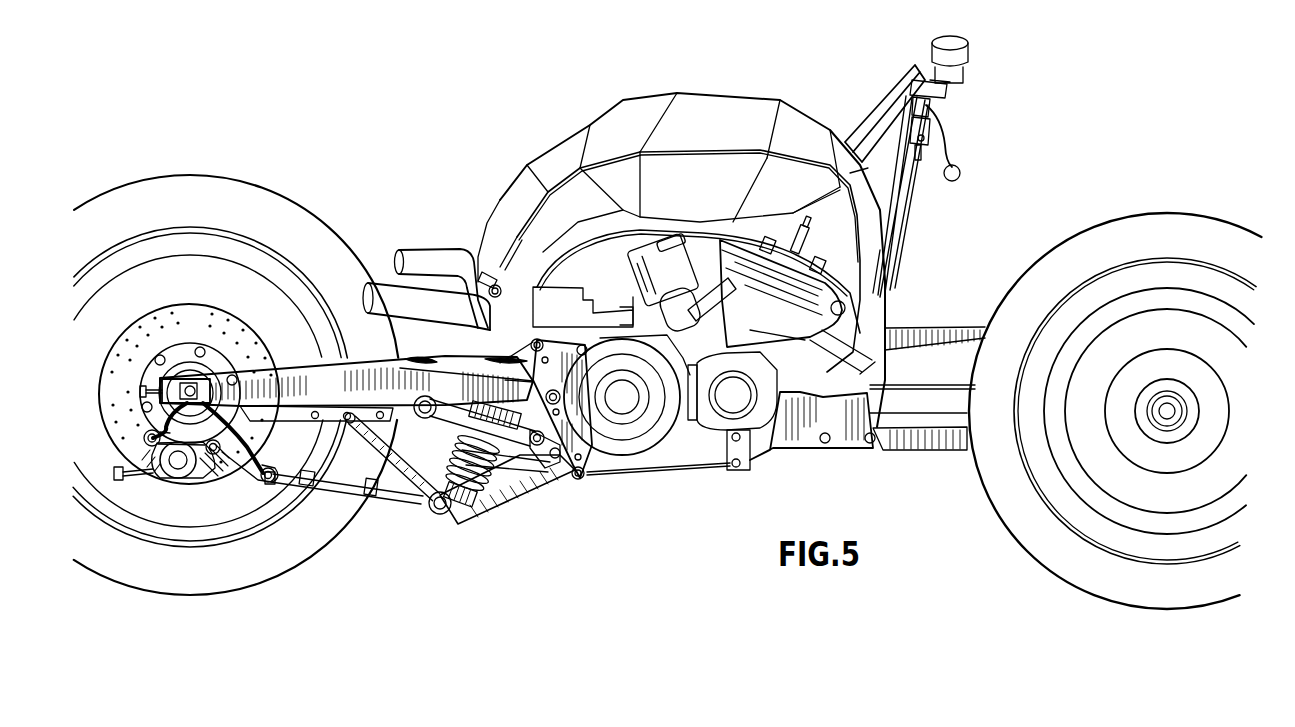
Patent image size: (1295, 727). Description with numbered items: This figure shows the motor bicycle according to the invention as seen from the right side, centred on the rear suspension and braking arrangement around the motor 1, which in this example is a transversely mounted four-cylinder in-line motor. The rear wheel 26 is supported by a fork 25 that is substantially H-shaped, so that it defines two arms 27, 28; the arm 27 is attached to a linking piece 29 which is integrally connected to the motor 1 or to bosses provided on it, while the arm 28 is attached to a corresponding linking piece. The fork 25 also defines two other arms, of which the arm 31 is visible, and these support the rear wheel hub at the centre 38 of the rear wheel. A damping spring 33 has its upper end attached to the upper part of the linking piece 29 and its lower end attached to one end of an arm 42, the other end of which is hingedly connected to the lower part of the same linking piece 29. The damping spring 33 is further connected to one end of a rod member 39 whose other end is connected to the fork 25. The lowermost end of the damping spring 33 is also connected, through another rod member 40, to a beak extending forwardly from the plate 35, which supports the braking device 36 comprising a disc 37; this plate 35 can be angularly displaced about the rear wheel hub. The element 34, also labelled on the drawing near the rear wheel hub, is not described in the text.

The motor 1 is at (667, 417).
The fork 25 is at (443, 357).
The rear wheel 26 is at (283, 207).
The arm 27 is at (490, 360).
The arm 28 is at (525, 393).
The linking piece 29 is at (568, 425).
The arm 31 is at (295, 385).
The damping spring 33 is at (503, 497).
The torque arm 34 is at (267, 473).
The plate 35 is at (210, 477).
The braking device 36 is at (157, 465).
The disc 37 is at (173, 323).
The centre of the rear wheel 38 is at (193, 383).
The rod member 39 is at (402, 497).
The rod member 40 is at (350, 490).
The arm 42 is at (477, 507).